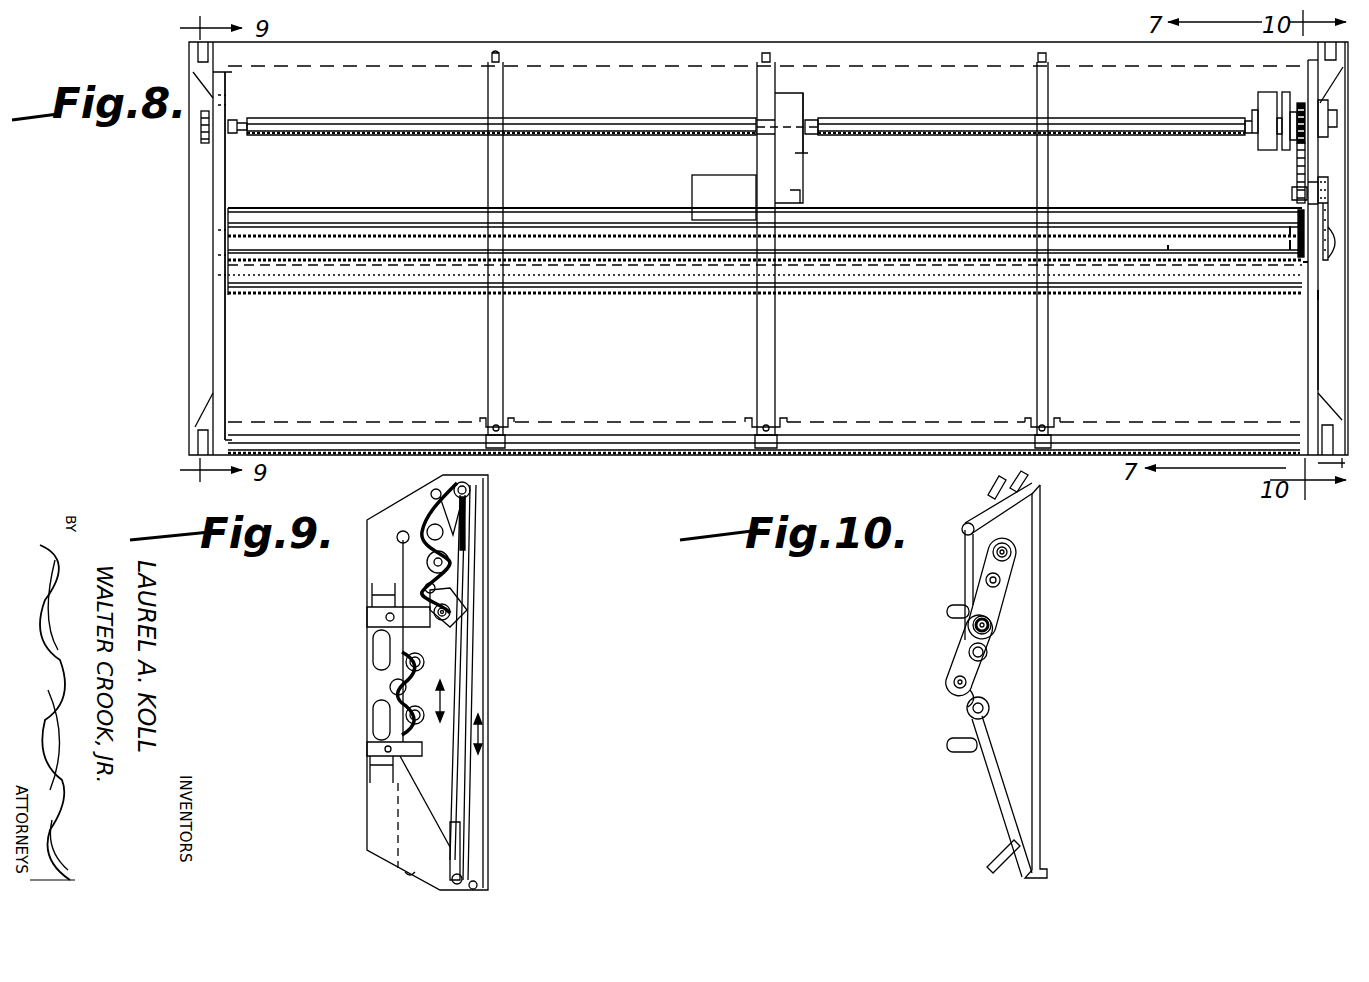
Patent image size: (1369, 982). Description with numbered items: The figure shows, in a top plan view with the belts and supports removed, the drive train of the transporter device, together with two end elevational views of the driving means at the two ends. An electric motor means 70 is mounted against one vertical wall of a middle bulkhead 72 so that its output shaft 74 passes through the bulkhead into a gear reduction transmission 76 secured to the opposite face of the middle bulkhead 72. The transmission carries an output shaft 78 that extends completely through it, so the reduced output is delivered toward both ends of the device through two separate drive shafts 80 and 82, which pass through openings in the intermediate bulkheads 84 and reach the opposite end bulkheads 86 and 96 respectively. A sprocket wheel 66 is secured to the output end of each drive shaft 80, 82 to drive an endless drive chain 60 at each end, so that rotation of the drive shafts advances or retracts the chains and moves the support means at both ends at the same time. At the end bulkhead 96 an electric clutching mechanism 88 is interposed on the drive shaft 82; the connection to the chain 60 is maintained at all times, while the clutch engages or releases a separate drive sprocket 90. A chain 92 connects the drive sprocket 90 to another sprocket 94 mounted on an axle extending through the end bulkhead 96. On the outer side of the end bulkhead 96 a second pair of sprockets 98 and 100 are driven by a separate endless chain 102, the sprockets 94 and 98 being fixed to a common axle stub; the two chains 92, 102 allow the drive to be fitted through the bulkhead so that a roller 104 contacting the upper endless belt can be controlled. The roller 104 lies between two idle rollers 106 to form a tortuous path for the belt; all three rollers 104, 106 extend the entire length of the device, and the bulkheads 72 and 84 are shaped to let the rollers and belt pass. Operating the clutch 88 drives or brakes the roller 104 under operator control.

In FIG. 9, the endless drive chain 60 is at (470, 672).
In FIG. 8, the sprocket wheel 66 is at (1322, 127).
In FIG. 9, the sprocket wheel 66 is at (446, 567).
In FIG. 8, the electric motor means 70 is at (692, 200).
In FIG. 8, the middle bulkhead 72 is at (775, 367).
In FIG. 8, the output shaft 74 is at (806, 200).
In FIG. 8, the gear reduction transmission 76 is at (805, 104).
In FIG. 8, the output shaft 78 is at (770, 118).
In FIG. 8, the drive shaft 80 is at (423, 135).
In FIG. 8, the drive shaft 82 is at (1157, 138).
In FIG. 8, the intermediate bulkheads 84 is at (505, 358).
In FIG. 8, the end bulkhead 86 is at (222, 190).
In FIG. 9, the end bulkhead 86 is at (438, 777).
In FIG. 8, the electric clutching mechanism 88 is at (1265, 135).
In FIG. 8, the drive sprocket 90 is at (1298, 103).
In FIG. 8, the chain 92 is at (1295, 160).
In FIG. 10, the chain 92 is at (1005, 603).
In FIG. 8, the sprocket 94 is at (1290, 228).
In FIG. 10, the sprocket 94 is at (992, 633).
In FIG. 8, the end bulkhead 96 is at (1310, 384).
In FIG. 10, the end bulkhead 96 is at (1020, 788).
In FIG. 8, the sprocket 98 is at (1330, 194).
In FIG. 8, the sprocket 100 is at (1306, 265).
In FIG. 10, the sprocket 100 is at (958, 694).
In FIG. 8, the endless chain 102 is at (1318, 298).
In FIG. 10, the endless chain 102 is at (957, 652).
In FIG. 8, the roller 104 is at (1168, 246).
In FIG. 9, the roller 104 is at (403, 668).
In FIG. 8, the idle rollers 106 is at (937, 224).